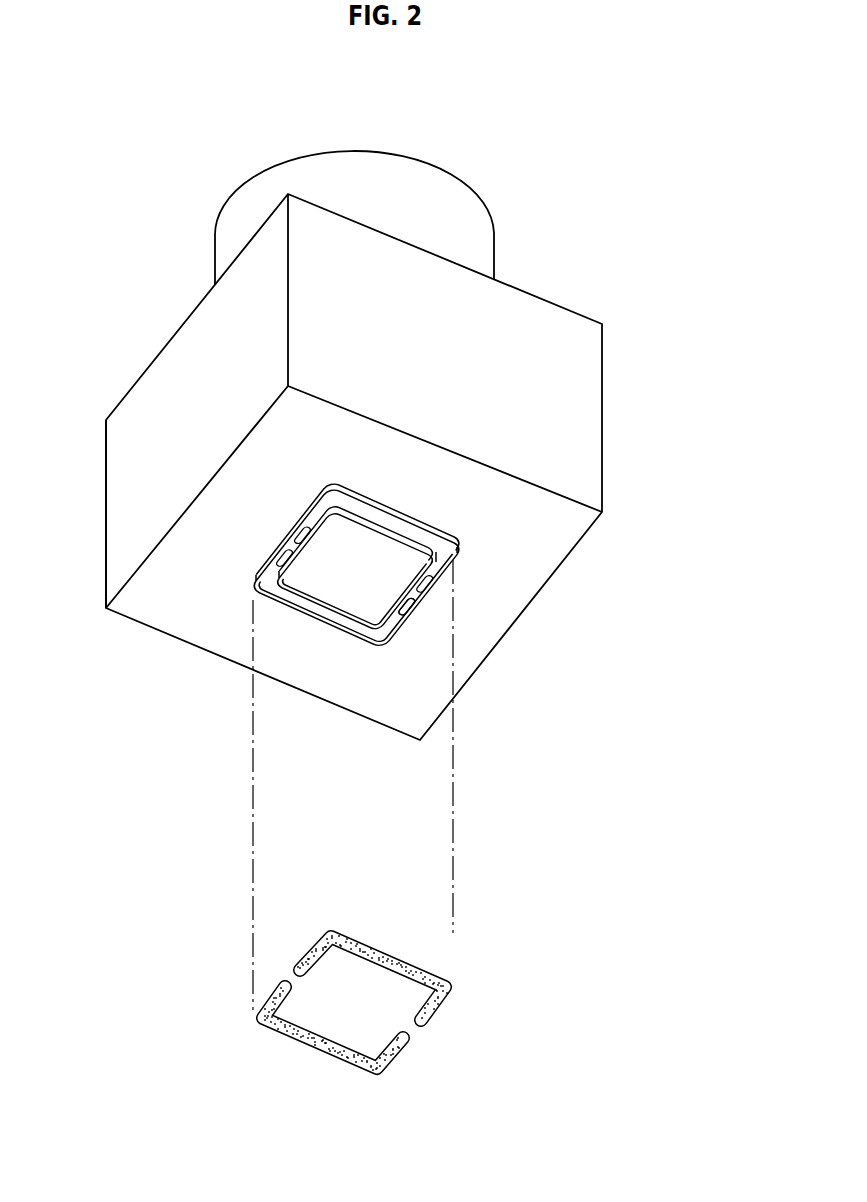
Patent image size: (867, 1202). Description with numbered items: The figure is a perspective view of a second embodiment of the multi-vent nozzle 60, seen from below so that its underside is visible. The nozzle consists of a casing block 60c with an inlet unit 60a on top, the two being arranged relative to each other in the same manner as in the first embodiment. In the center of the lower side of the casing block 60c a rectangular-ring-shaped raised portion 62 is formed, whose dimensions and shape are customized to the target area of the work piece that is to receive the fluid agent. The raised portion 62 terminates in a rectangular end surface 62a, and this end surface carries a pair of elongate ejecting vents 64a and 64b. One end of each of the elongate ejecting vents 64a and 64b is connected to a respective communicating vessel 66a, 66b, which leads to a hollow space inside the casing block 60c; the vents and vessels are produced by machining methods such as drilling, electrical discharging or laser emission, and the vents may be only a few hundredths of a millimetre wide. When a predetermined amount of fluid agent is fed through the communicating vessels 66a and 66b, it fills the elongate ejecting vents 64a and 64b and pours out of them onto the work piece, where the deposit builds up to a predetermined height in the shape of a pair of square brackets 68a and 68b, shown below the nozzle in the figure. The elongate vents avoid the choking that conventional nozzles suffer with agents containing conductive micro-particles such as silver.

The multi-vent nozzle 60 is at (627, 397).
The inlet unit 60a is at (473, 247).
The casing block 60c is at (122, 512).
The raised portion 62 is at (313, 638).
The rectangular end surface 62a is at (422, 600).
The elongate ejecting vent 64a is at (345, 627).
The elongate ejecting vent 64b is at (398, 532).
The communicating vessel 66a is at (283, 556).
The communicating vessel 66b is at (430, 588).
The square bracket 68a is at (315, 1050).
The square bracket 68b is at (373, 957).